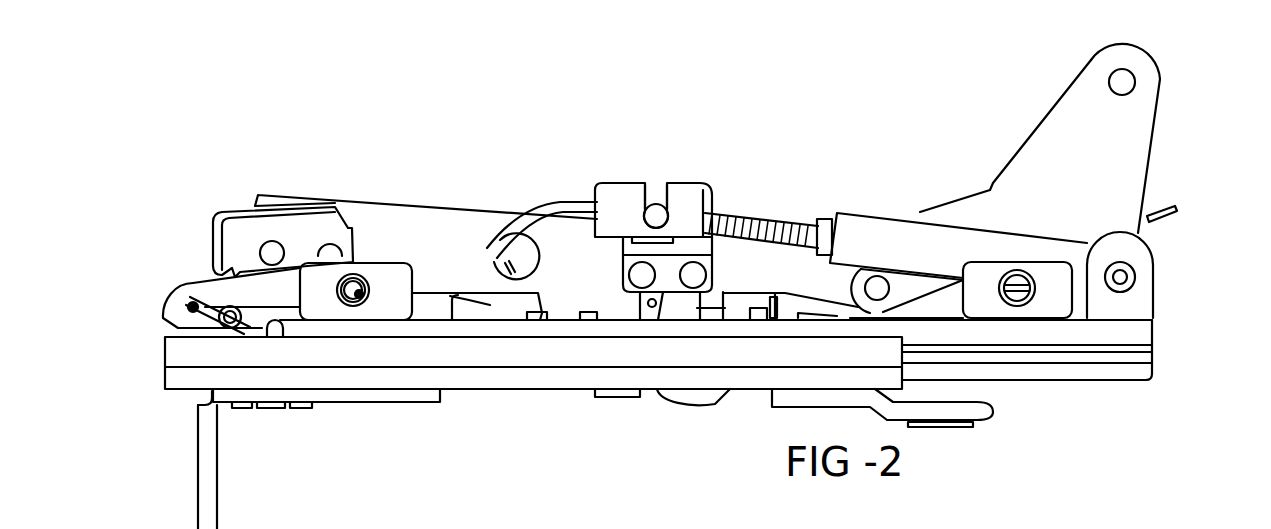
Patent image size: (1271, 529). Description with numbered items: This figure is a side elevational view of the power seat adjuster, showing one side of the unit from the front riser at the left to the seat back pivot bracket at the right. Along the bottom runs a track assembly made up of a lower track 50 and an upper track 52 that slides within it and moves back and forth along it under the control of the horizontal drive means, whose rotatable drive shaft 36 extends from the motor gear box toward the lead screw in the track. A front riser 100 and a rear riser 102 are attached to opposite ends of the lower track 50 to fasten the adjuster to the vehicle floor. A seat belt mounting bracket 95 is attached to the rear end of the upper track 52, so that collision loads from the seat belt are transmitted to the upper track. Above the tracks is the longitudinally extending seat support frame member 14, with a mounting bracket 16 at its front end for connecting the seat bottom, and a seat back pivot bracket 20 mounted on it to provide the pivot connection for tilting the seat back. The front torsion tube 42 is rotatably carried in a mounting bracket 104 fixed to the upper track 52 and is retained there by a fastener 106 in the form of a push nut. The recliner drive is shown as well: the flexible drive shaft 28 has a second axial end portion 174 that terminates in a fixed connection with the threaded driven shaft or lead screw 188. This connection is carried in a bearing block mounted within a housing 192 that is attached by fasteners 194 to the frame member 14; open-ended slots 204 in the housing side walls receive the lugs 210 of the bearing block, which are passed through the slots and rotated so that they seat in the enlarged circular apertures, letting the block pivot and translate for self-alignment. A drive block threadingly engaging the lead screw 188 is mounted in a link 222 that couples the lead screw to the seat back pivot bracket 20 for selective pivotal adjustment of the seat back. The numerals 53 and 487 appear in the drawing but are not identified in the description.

The seat support frame member 14 is at (363, 208).
The mounting bracket 16 is at (238, 212).
The seat back pivot bracket 20 is at (1143, 108).
The drive shaft 28 is at (533, 219).
The drive shaft 36 is at (197, 310).
The front torsion tube 42 is at (368, 296).
The lower track 50 is at (543, 378).
The upper track 52 is at (1117, 358).
The rail member 53 is at (500, 523).
The seat belt mounting bracket 95 is at (1145, 272).
The front riser 100 is at (210, 488).
The rear riser 102 is at (977, 413).
The mounting bracket 104 is at (320, 310).
The fastener 106 is at (352, 307).
The second axial end portion 174 is at (578, 207).
The driven shaft 188 is at (767, 215).
The housing 192 is at (622, 198).
The fastener 194 is at (633, 275).
The slot 204 is at (661, 213).
The lug 210 is at (647, 213).
The link 222 is at (908, 237).
The frame member 487 is at (655, 520).